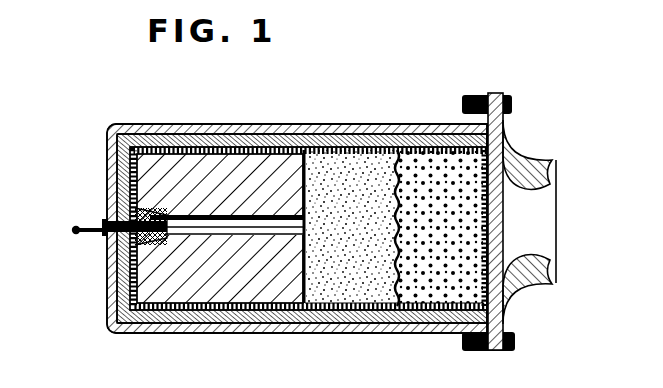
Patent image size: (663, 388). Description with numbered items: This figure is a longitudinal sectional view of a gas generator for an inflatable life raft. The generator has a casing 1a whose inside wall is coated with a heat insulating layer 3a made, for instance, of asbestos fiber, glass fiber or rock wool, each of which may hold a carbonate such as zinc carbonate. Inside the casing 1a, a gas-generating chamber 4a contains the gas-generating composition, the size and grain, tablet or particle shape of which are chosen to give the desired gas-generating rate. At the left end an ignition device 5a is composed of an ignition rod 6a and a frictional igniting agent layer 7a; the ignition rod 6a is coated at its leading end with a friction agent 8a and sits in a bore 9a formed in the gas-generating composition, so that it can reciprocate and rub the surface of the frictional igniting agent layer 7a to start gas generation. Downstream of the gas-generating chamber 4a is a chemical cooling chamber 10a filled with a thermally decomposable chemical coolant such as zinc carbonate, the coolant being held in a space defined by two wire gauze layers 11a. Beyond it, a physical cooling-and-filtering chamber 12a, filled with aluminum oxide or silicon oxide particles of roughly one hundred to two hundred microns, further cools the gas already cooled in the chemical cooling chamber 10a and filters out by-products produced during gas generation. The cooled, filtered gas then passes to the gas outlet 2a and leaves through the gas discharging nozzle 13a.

The casing 1a is at (252, 127).
The gas outlet 2a is at (535, 221).
The heat insulating layer 3a is at (328, 155).
The gas-generating chamber 4a is at (205, 190).
The ignition device 5a is at (112, 262).
The ignition rod 6a is at (92, 238).
The frictional igniting agent layer 7a is at (117, 193).
The friction agent 8a is at (174, 236).
The bore 9a is at (233, 237).
The chemical cooling chamber 10a is at (366, 270).
The wire gauze layers 11a is at (408, 153).
The physical cooling-and-filtering chamber 12a is at (434, 273).
The gas discharging nozzle 13a is at (527, 170).